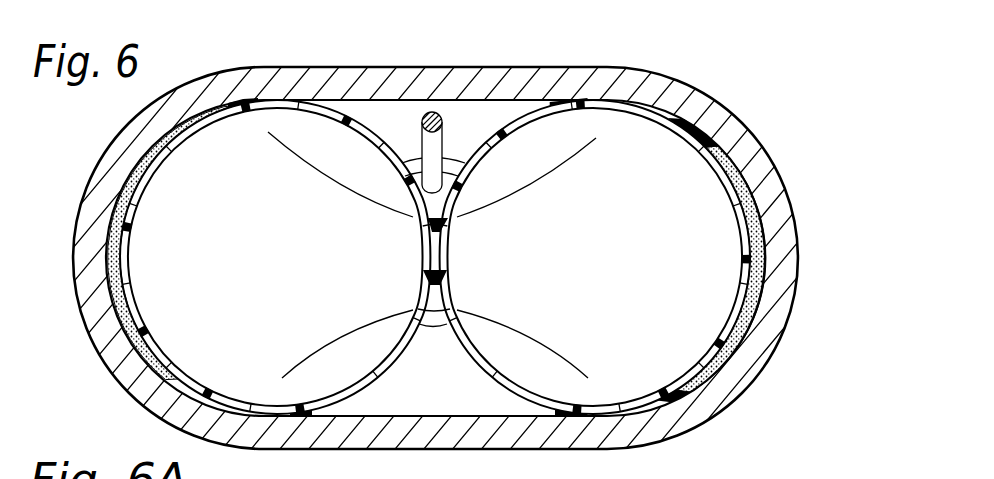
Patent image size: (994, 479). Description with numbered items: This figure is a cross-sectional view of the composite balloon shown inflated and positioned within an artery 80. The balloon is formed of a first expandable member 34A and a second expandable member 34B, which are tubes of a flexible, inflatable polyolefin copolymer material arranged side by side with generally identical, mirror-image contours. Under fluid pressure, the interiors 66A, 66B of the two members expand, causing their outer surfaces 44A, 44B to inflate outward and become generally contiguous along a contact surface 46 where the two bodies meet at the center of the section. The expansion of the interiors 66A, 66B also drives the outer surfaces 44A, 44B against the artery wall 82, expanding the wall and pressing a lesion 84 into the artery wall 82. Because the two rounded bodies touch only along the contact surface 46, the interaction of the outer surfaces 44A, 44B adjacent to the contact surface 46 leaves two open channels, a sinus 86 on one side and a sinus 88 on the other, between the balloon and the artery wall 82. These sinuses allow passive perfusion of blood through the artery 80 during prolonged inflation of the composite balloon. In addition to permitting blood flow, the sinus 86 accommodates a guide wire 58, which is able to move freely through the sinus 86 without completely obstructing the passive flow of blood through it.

The first expandable member 34A is at (236, 129).
The second expandable member 34B is at (667, 163).
The outer surface 44A is at (395, 117).
The outer surface 44B is at (507, 117).
The sinus 86 is at (441, 110).
The guide wire 58 is at (467, 70).
The artery wall 82 is at (563, 100).
The artery 80 is at (767, 153).
The interior 66A is at (233, 173).
The interior 66B is at (700, 227).
The lesion 84 is at (110, 213).
The contact surface 46 is at (440, 253).
The sinus 88 is at (455, 387).